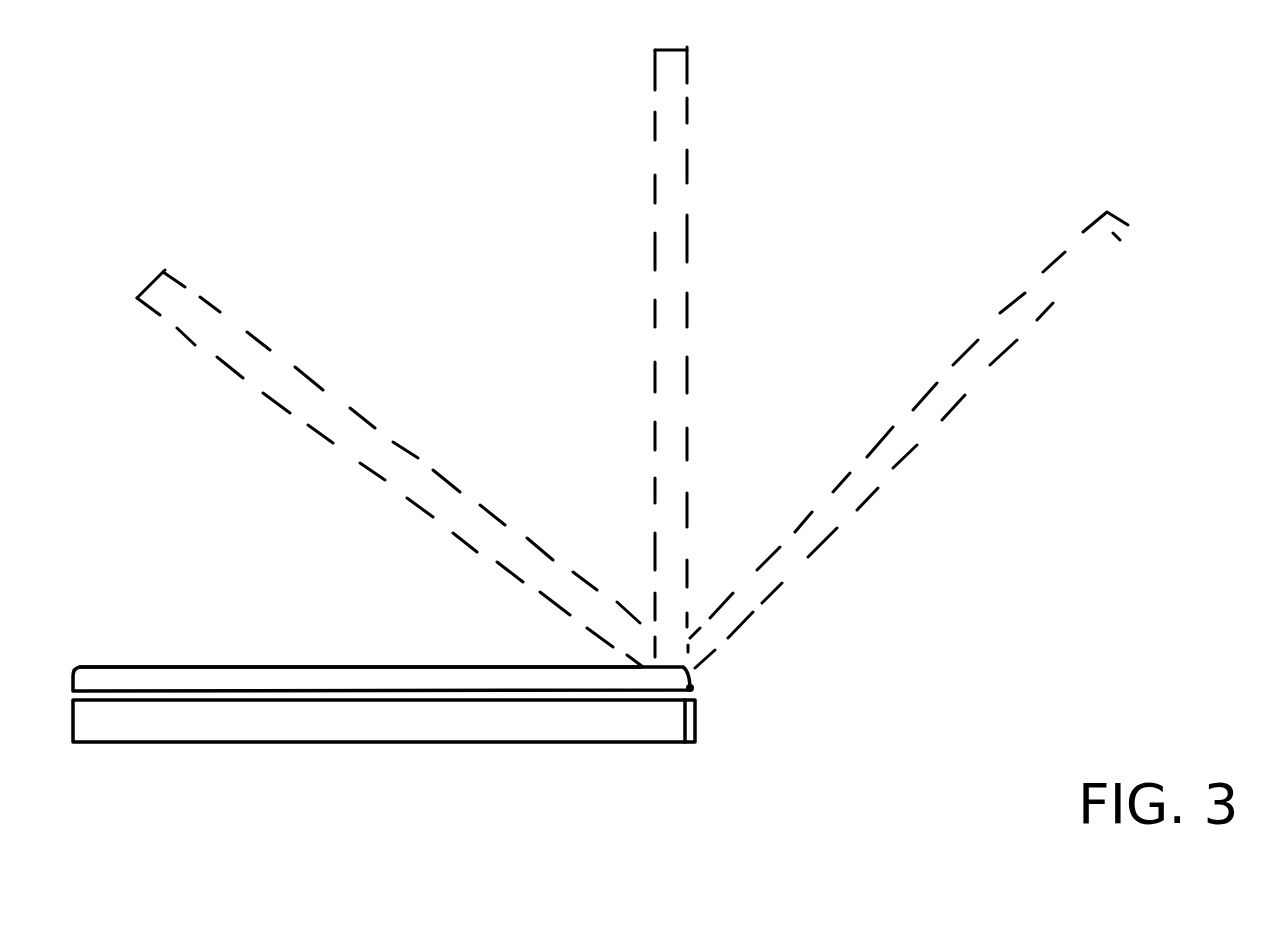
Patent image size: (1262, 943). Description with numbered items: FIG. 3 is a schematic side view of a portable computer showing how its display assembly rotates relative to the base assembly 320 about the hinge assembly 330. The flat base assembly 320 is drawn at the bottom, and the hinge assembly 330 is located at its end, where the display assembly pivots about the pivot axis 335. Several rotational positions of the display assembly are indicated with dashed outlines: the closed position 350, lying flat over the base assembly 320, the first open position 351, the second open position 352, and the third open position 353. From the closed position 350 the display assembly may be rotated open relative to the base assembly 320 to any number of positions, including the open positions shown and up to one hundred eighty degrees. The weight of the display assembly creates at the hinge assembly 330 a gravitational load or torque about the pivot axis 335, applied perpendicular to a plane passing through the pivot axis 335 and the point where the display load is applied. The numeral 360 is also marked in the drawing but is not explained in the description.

The base assembly 320 is at (252, 730).
The hinge assembly 330 is at (690, 720).
The pivot axis 335 is at (695, 685).
The closed position 350 is at (312, 672).
The first open position 351 is at (272, 380).
The second open position 352 is at (665, 197).
The third open position 353 is at (1043, 270).
The surface of layer 360 is at (130, 676).